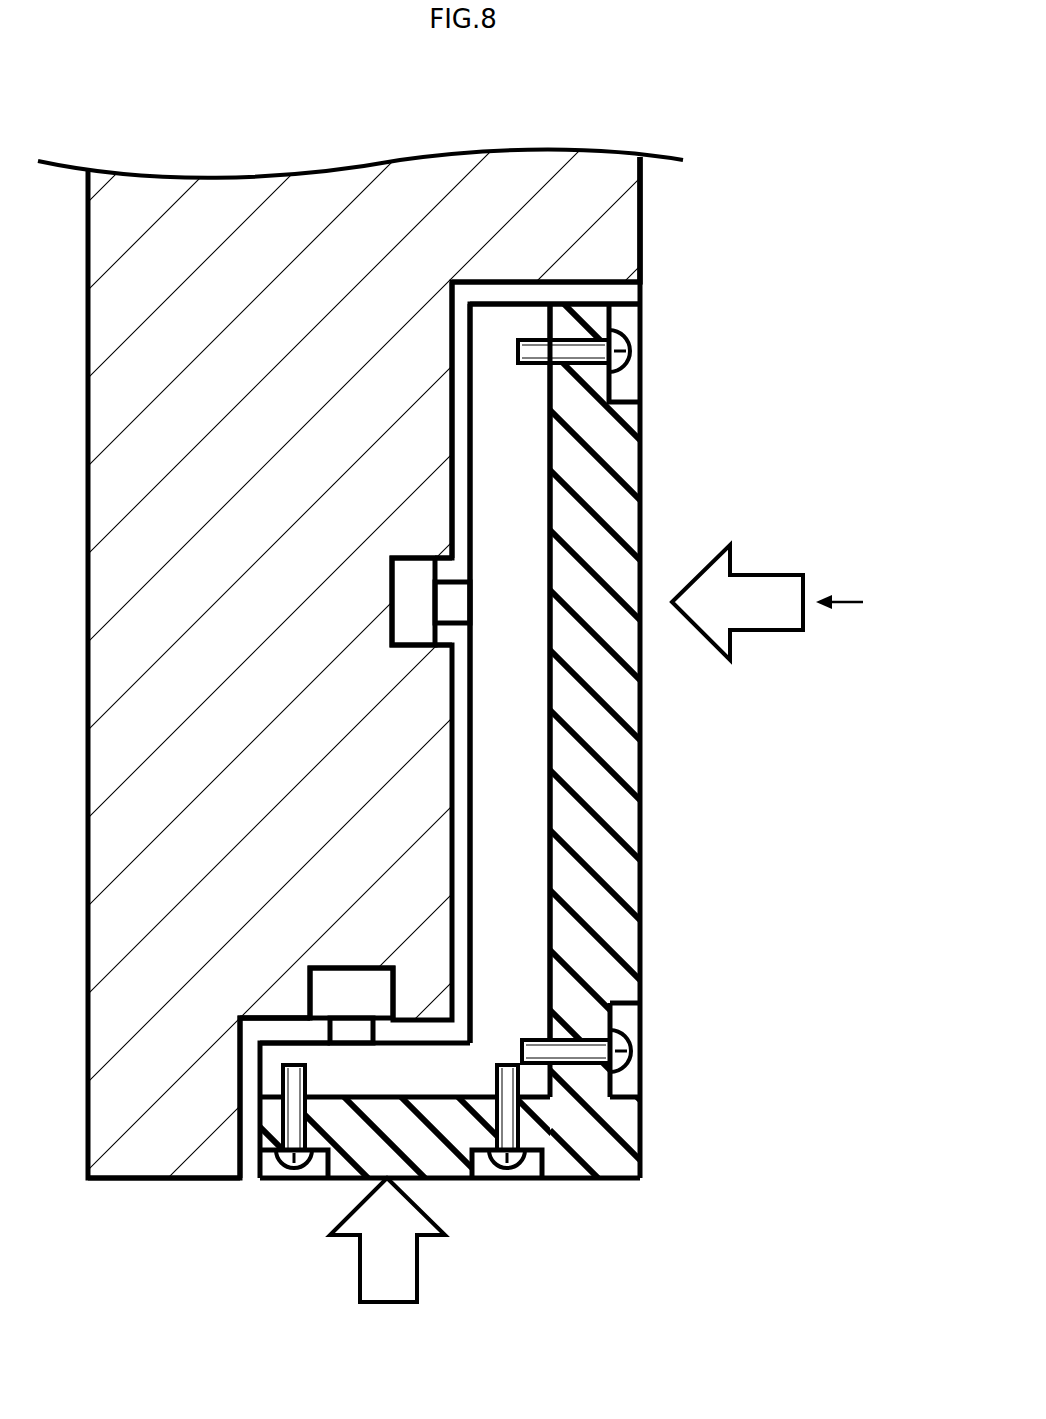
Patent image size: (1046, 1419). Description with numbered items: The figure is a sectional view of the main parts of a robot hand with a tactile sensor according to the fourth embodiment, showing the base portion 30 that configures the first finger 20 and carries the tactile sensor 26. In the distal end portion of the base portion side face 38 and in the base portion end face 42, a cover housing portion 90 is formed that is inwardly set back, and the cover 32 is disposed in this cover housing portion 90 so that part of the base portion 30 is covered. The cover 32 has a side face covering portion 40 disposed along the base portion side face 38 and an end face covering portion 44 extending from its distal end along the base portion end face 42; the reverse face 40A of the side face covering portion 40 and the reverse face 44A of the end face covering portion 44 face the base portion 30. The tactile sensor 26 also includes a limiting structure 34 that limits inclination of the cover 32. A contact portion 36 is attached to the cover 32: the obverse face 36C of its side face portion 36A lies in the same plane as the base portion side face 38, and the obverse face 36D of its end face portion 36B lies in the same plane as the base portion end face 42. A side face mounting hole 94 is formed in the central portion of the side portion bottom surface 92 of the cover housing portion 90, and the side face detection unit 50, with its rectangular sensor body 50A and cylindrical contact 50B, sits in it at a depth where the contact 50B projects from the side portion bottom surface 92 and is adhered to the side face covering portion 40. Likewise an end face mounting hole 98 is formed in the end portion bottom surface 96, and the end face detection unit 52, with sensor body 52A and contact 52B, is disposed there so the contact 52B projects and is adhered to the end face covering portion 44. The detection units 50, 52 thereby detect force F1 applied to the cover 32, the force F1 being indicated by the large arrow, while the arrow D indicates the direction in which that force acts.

The first finger 20 is at (300, 153).
The tactile sensor 26 is at (489, 686).
The base portion 30 is at (545, 165).
The cover 32 is at (518, 302).
The limiting structure 34 is at (462, 294).
The contact portion 36 is at (486, 686).
The side face portion 36A is at (641, 768).
The end face portion 36B is at (440, 1180).
The obverse face 36C is at (641, 830).
The obverse face 36D is at (556, 1180).
The base portion side face 38 is at (642, 195).
The side face covering portion 40 is at (520, 463).
The reverse face 40A is at (462, 420).
The base portion end face 42 is at (132, 1178).
The end face covering portion 44 is at (345, 1180).
The reverse face 44A is at (266, 1024).
The side face detection unit 50 is at (564, 557).
The sensor body 50A is at (433, 565).
The contact 50B is at (458, 598).
The end face detection unit 52 is at (531, 967).
The sensor body 52A is at (365, 980).
The contact 52B is at (355, 1030).
The cover housing portion 90 is at (584, 302).
The side portion bottom surface 92 is at (460, 380).
The side face mounting hole 94 is at (541, 557).
The end portion bottom surface 96 is at (290, 1028).
The end face mounting hole 98 is at (508, 967).
The force F1 is at (763, 575).
The direction D is at (852, 603).